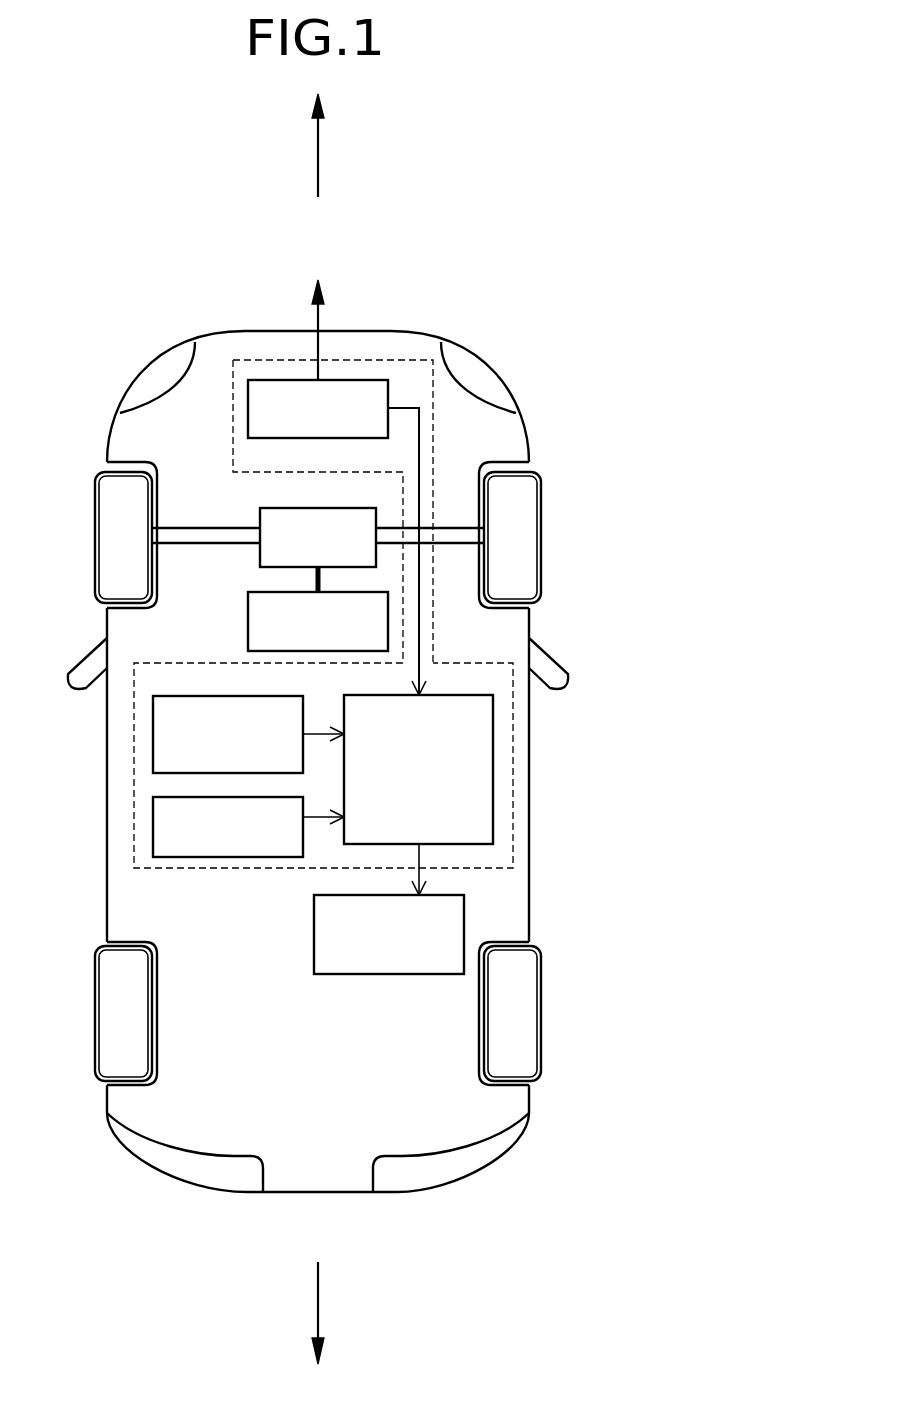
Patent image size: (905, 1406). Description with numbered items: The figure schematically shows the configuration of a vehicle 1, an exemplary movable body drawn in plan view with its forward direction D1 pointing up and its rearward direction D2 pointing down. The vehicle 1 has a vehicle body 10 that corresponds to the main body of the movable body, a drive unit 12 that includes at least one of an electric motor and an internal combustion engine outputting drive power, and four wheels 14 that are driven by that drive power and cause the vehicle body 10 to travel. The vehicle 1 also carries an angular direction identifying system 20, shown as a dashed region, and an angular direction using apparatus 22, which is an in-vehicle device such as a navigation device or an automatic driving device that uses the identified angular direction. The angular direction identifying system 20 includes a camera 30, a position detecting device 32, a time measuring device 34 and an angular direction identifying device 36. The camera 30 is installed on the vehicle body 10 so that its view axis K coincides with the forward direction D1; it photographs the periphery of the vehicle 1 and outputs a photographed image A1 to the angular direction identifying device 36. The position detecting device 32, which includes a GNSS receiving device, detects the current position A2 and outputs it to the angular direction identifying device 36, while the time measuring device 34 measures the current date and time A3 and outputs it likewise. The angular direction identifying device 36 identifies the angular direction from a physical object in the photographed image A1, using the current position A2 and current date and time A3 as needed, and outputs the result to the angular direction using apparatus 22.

The vehicle 1 is at (541, 312).
The vehicle body 10 is at (530, 790).
The drive unit 12 is at (248, 623).
The wheels 14 is at (95, 536).
The angular direction identifying system 20 is at (134, 772).
The angular direction using apparatus 22 is at (464, 913).
The camera 30 is at (373, 380).
The position detecting device 32 is at (153, 715).
The time measuring device 34 is at (153, 825).
The angular direction identifying device 36 is at (493, 733).
The view axis K is at (321, 313).
The forward direction D1 is at (320, 148).
The rearward direction D2 is at (320, 1307).
The photographed image A1 is at (420, 627).
The current position A2 is at (320, 730).
The current date and time A3 is at (317, 820).